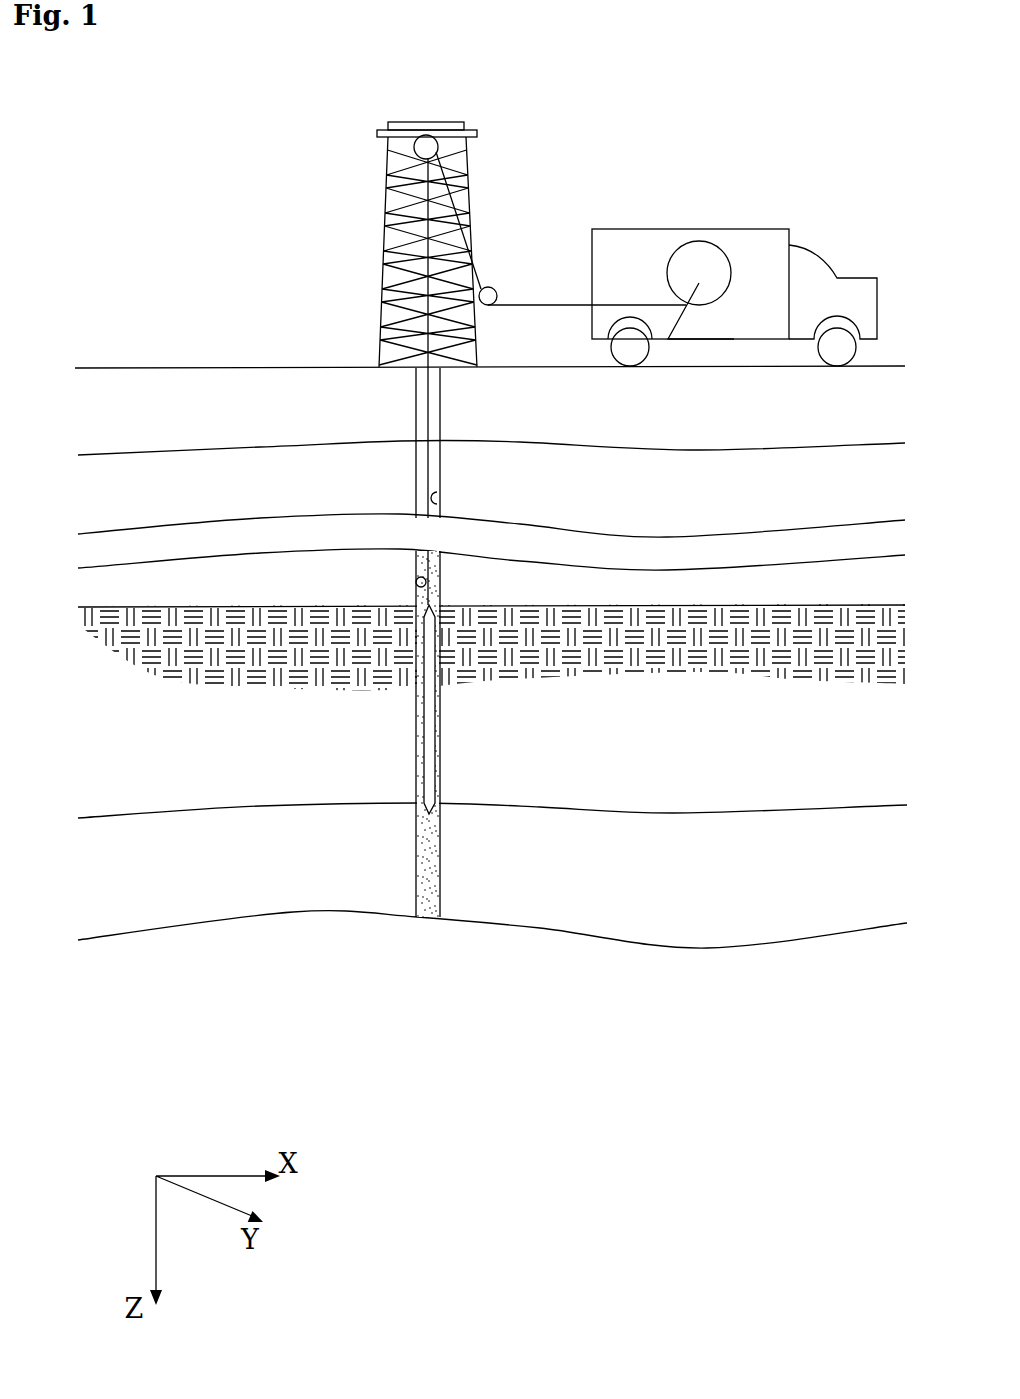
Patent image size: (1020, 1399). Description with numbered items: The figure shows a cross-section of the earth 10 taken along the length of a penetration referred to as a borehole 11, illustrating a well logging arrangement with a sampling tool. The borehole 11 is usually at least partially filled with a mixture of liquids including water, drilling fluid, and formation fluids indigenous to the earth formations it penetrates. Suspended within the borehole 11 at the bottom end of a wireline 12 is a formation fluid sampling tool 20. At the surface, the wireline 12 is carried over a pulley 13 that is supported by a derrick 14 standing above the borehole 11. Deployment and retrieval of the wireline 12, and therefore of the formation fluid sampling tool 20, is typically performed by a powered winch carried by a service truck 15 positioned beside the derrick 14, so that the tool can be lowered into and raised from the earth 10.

The earth 10 is at (688, 503).
The borehole 11 is at (437, 468).
The wireline 12 is at (441, 505).
The pulley 13 is at (415, 149).
The derrick 14 is at (381, 310).
The service truck 15 is at (751, 236).
The formation fluid sampling tool 20 is at (431, 780).